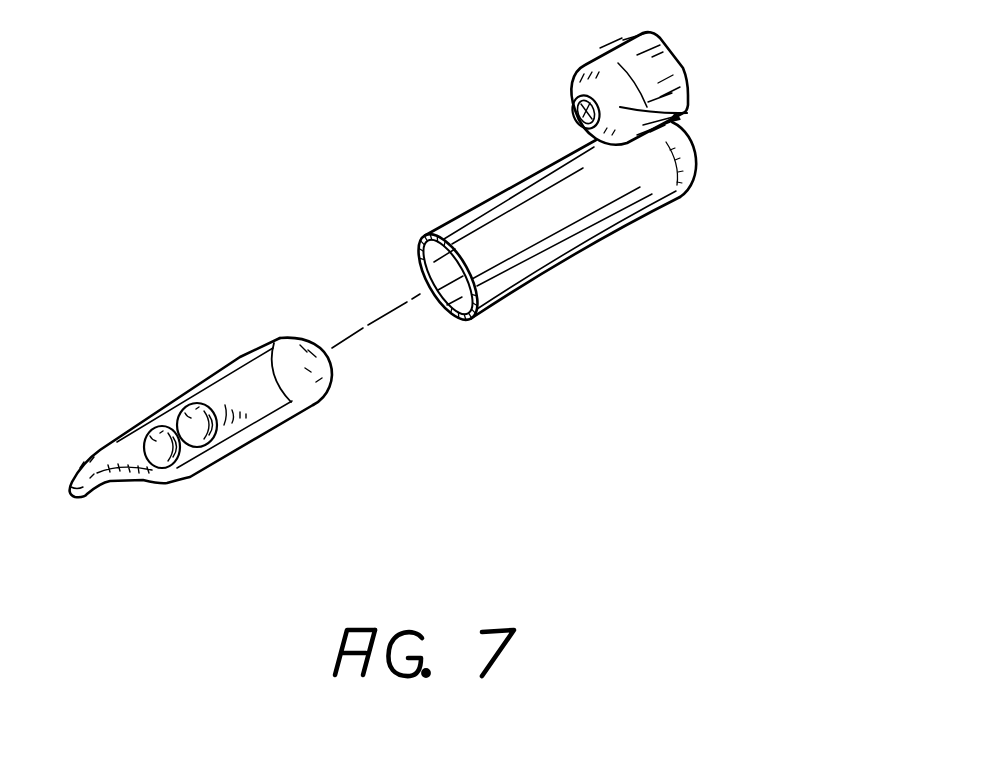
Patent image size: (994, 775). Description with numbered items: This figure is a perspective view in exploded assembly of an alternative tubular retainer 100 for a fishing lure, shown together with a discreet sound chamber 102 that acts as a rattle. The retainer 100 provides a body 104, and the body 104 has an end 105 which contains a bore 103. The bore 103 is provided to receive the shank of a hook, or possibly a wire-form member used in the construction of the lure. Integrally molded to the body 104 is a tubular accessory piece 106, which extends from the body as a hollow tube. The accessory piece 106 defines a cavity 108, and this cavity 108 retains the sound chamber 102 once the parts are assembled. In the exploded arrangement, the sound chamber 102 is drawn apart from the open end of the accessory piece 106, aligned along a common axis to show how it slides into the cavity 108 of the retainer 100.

The retainer 100 is at (502, 225).
The sound chamber 102 is at (205, 360).
The bore 103 is at (572, 113).
The body 104 is at (630, 86).
The end 105 is at (687, 113).
The tubular accessory piece 106 is at (578, 279).
The cavity 108 is at (434, 266).